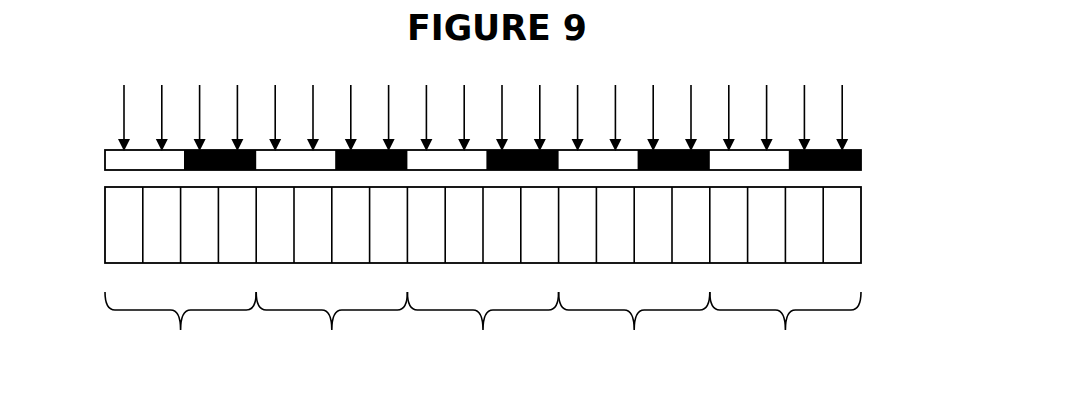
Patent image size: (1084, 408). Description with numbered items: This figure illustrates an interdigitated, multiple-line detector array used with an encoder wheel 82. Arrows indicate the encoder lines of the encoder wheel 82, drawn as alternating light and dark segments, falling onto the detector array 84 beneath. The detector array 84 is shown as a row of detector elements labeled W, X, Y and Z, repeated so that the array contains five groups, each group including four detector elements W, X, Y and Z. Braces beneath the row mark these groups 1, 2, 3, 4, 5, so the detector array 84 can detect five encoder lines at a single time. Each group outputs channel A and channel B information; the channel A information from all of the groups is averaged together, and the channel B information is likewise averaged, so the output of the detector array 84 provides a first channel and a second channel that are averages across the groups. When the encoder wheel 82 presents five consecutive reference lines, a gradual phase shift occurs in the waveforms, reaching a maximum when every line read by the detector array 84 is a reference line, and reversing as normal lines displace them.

The encoder wheel 82 is at (861, 158).
The interdigitated, multiple line detector array 84 is at (862, 225).
The first group of four detector cells 1 is at (180, 333).
The second group of four detector cells 2 is at (331, 333).
The third group of four detector cells 3 is at (482, 333).
The fourth group of four detector cells 4 is at (634, 332).
The fifth group of four detector cells 5 is at (785, 332).